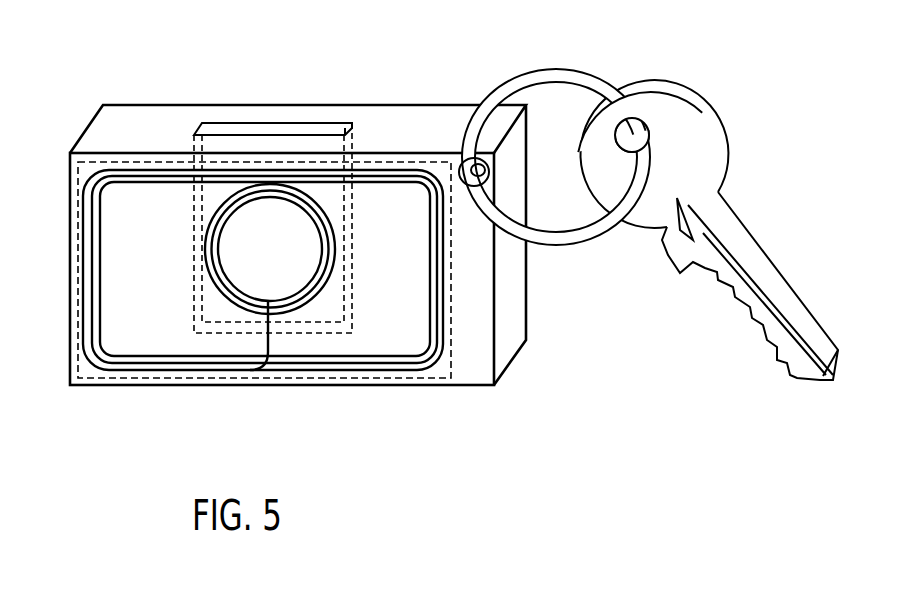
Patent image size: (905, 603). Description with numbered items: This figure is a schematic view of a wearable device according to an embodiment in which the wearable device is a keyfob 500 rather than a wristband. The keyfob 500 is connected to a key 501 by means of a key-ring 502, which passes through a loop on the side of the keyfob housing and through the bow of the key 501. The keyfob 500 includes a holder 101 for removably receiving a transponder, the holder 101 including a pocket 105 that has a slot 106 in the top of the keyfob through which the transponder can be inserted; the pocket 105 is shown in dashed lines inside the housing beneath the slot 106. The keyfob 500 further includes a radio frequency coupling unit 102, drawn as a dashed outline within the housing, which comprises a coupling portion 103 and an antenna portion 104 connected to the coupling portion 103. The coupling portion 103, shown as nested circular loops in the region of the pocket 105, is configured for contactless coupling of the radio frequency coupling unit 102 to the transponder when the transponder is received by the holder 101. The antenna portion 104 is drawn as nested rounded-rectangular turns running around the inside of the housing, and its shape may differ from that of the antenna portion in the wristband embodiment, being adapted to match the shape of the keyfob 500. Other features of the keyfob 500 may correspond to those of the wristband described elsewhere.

The keyfob 500 is at (90, 117).
The holder 101 is at (211, 90).
The slot 106 is at (245, 122).
The pocket 105 is at (351, 134).
The radio frequency coupling unit 102 is at (437, 380).
The antenna portion 104 is at (220, 365).
The coupling portion 103 is at (207, 286).
The key 501 is at (718, 123).
The key-ring 502 is at (554, 70).